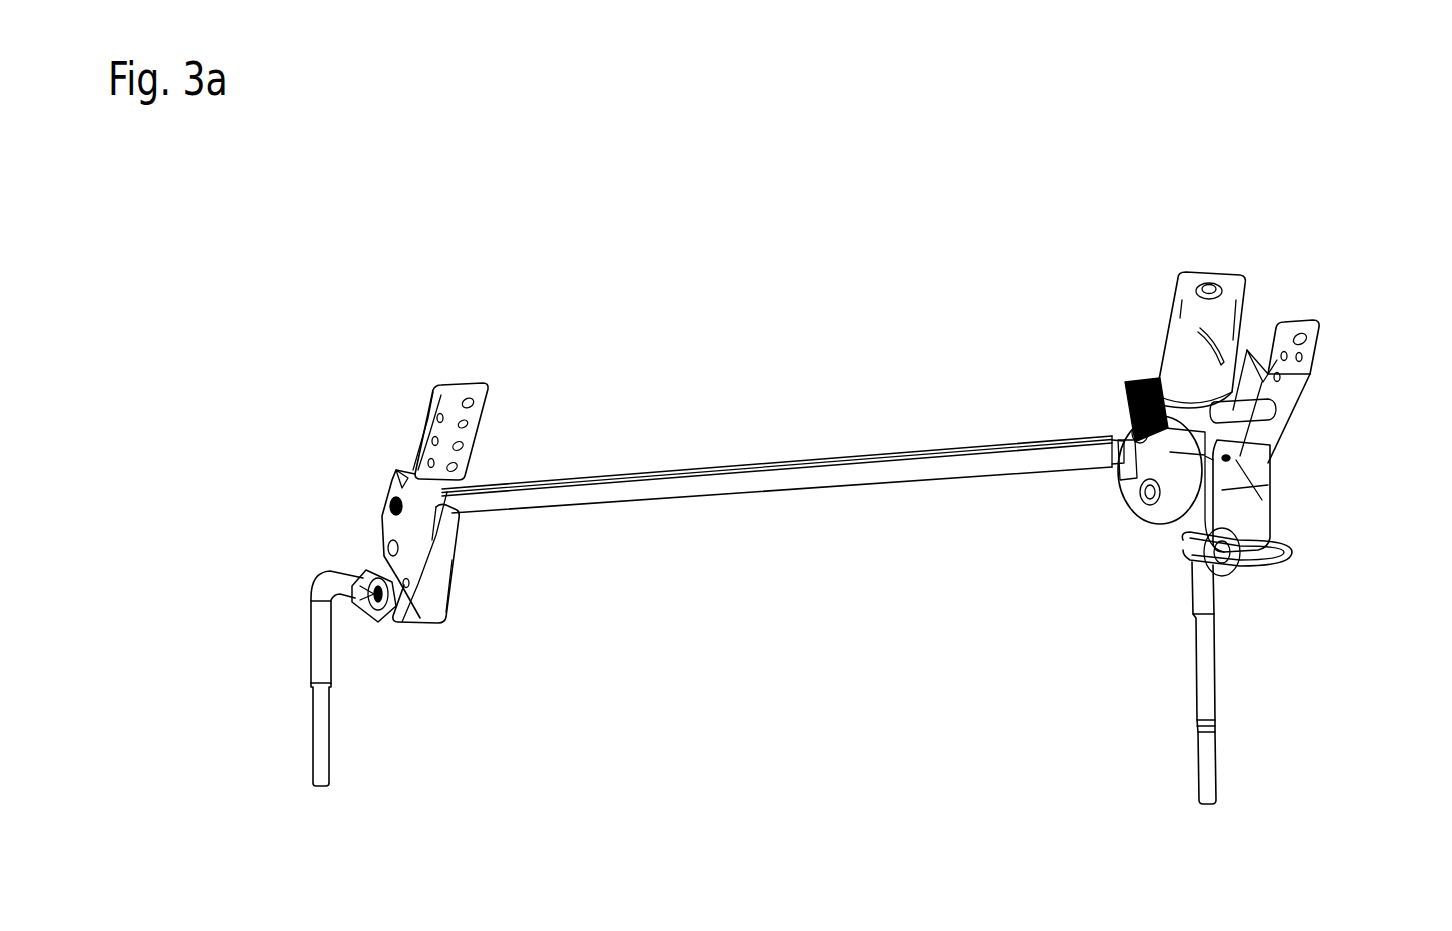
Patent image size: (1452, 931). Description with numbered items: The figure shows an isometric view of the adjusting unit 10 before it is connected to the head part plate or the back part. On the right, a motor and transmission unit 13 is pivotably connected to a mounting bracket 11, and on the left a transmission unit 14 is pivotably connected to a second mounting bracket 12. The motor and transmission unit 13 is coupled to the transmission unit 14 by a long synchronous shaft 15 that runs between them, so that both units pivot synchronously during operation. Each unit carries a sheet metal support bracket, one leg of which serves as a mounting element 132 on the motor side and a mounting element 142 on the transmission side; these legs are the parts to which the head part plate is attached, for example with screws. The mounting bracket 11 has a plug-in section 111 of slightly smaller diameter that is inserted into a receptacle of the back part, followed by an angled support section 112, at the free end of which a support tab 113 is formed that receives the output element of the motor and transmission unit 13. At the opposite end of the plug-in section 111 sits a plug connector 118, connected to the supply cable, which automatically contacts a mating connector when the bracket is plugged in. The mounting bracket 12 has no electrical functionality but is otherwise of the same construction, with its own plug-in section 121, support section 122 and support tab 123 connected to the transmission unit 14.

The adjusting unit 10 is at (1098, 246).
The mounting bracket 11 is at (1243, 692).
The mounting bracket 12 is at (352, 687).
The motor and transmission unit 13 is at (1119, 517).
The transmission unit 14 is at (462, 589).
The synchronous shaft 15 is at (748, 482).
The plug-in section 111 is at (1205, 648).
The support section 112 is at (1192, 582).
The support tab 113 is at (1268, 548).
The plug connector 118 is at (1208, 763).
The plug-in section 121 is at (325, 717).
The support section 122 is at (322, 640).
The support tab 123 is at (365, 578).
The mounting element 132 is at (1311, 347).
The mounting element 142 is at (453, 398).